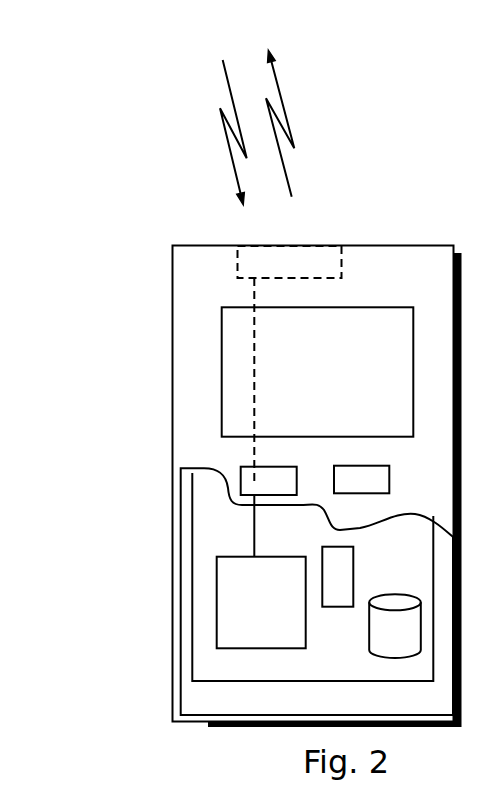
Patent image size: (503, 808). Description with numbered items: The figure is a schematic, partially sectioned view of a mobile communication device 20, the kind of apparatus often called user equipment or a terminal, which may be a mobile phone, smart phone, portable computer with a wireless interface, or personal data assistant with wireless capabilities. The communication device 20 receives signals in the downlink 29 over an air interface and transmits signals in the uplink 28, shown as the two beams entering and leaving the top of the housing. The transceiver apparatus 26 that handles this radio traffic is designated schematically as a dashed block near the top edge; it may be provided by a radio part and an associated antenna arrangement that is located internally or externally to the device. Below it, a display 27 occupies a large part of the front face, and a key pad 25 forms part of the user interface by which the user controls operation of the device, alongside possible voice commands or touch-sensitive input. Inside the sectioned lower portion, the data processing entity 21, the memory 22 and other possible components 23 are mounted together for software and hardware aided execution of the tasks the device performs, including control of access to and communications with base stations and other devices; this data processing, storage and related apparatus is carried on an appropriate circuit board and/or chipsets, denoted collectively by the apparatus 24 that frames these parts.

The communication device 20 is at (173, 285).
The data processing entity 21 is at (225, 587).
The memory 22 is at (390, 639).
The other possible components 23 is at (338, 562).
The circuit board and/or chipsets apparatus 24 is at (217, 665).
The key pad 25 is at (243, 480).
The transceiver apparatus 26 is at (332, 258).
The display 27 is at (238, 358).
The uplink 28 is at (290, 117).
The downlink 29 is at (237, 97).